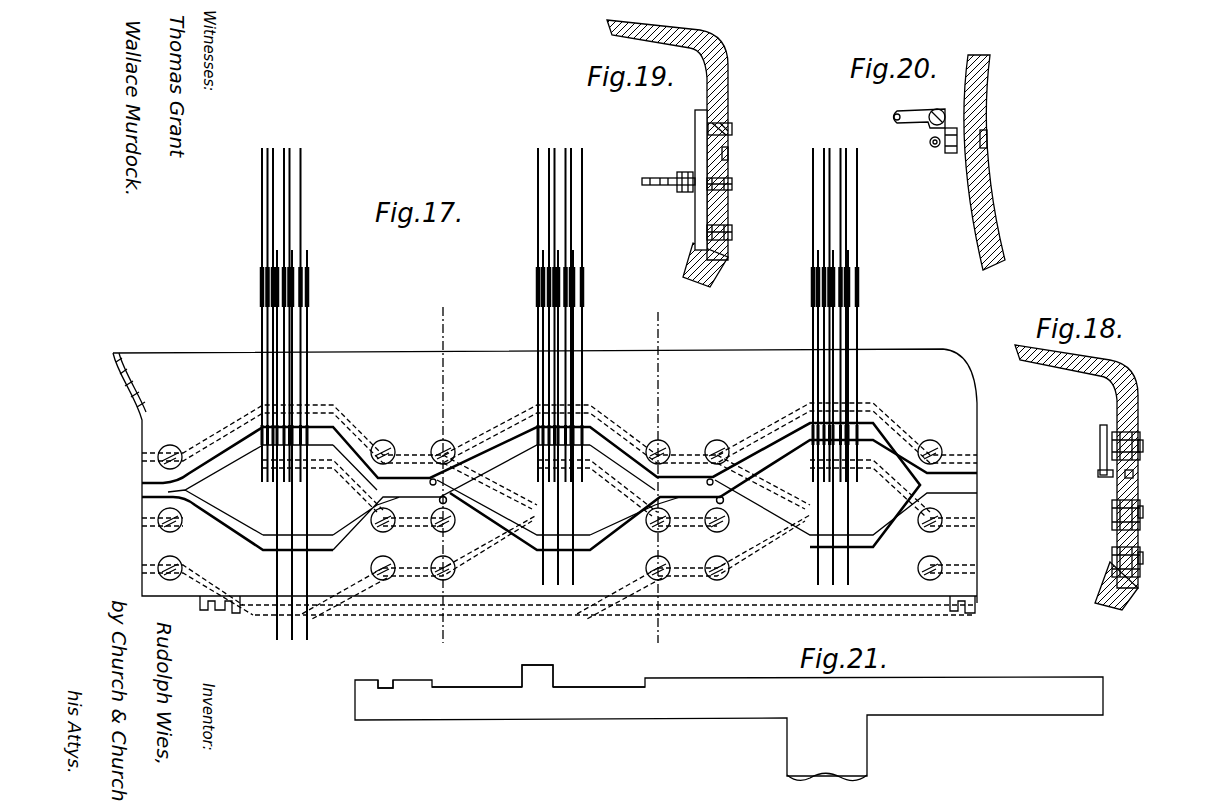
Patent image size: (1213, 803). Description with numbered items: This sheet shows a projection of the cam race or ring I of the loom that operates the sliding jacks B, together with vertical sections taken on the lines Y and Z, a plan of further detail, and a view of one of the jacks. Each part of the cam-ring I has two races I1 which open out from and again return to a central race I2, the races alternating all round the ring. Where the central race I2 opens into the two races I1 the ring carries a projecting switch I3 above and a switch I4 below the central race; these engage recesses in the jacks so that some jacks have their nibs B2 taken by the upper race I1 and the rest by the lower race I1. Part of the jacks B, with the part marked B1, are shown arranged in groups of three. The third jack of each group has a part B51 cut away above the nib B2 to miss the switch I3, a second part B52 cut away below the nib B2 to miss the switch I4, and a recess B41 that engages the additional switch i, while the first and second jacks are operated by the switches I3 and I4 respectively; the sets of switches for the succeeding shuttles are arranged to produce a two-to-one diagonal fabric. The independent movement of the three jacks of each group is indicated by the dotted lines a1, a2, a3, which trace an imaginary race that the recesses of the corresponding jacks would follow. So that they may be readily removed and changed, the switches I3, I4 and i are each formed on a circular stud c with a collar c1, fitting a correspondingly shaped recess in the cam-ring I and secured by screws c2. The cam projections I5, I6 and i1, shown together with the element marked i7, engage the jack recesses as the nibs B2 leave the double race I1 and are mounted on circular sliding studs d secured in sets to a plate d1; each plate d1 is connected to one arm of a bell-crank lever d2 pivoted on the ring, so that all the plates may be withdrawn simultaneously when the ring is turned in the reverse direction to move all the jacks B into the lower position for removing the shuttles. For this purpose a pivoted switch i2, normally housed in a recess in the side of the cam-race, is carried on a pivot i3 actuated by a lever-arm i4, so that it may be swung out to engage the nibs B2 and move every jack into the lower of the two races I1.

In FIG. 17, the sliding jack B is at (868, 330).
In FIG. 21, the sliding jack B is at (729, 720).
In FIG. 17, the needle butt B1 is at (875, 270).
In FIG. 21, the needle butt B1 is at (827, 761).
In FIG. 21, the nib B2 is at (540, 668).
In FIG. 21, the recess B41 is at (388, 682).
In FIG. 21, the cut-away part B51 is at (599, 672).
In FIG. 21, the second cut-away part B52 is at (477, 674).
In FIG. 17, the cam-ring I is at (545, 482).
In FIG. 17, the race I1 is at (600, 548).
In FIG. 17, the central race I2 is at (190, 490).
In FIG. 19, the central race I2 is at (730, 154).
In FIG. 17, the switch I3 is at (728, 447).
In FIG. 18, the switch I3 is at (1143, 446).
In FIG. 17, the switch I4 is at (735, 533).
In FIG. 18, the switch I4 is at (1143, 512).
In FIG. 17, the fixed switch I5 is at (939, 446).
In FIG. 19, the fixed switch I5 is at (735, 128).
In FIG. 20, the fixed switch I5 is at (990, 138).
In FIG. 17, the pivoted switch I6 is at (946, 536).
In FIG. 19, the pivoted switch I6 is at (733, 184).
In FIG. 17, the dotted line a1 is at (553, 437).
In FIG. 17, the dotted line a2 is at (553, 493).
In FIG. 17, the dotted line a3 is at (553, 567).
In FIG. 17, the circular stud c is at (460, 568).
In FIG. 18, the circular stud c is at (1140, 543).
In FIG. 18, the collar c1 is at (1152, 588).
In FIG. 18, the screw c2 is at (1112, 560).
In FIG. 17, the circular sliding stud d is at (674, 580).
In FIG. 19, the circular sliding stud d is at (702, 232).
In FIG. 19, the plate d1 is at (695, 143).
In FIG. 20, the plate d1 is at (945, 155).
In FIG. 19, the bell-crank lever d2 is at (655, 184).
In FIG. 20, the bell-crank lever d2 is at (912, 128).
In FIG. 17, the additional switch i is at (736, 570).
In FIG. 18, the additional switch i is at (1143, 558).
In FIG. 19, the cam projection i1 is at (733, 231).
In FIG. 17, the pivoted switch i2 is at (545, 490).
In FIG. 18, the pivoted switch i2 is at (1133, 474).
In FIG. 17, the pivot i3 is at (582, 495).
In FIG. 18, the pivot i3 is at (1100, 477).
In FIG. 18, the lever-arm i4 is at (1100, 452).
In FIG. 17, the cam stud i7 is at (945, 582).
In FIG. 17, the section line Y Y is at (441, 477).
In FIG. 17, the section line Z Z is at (661, 478).